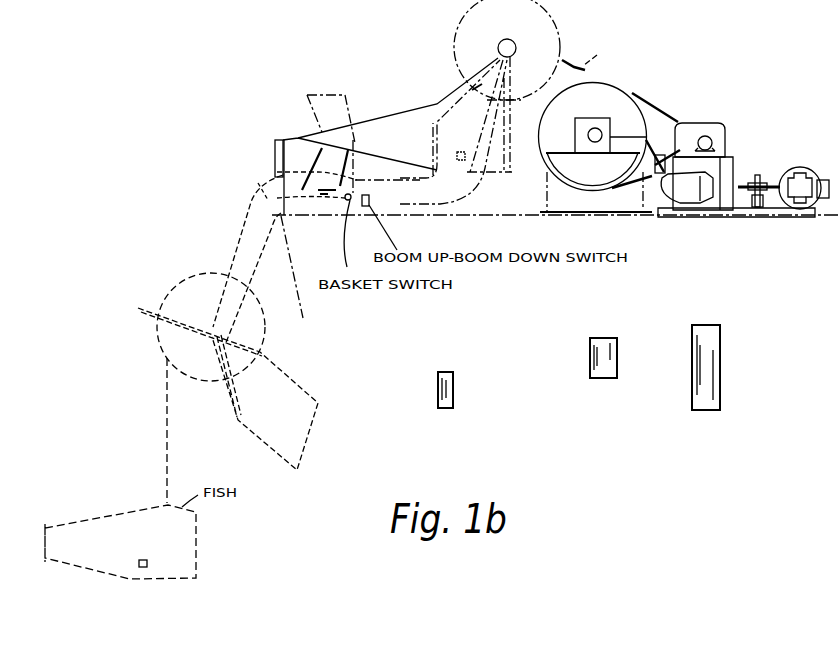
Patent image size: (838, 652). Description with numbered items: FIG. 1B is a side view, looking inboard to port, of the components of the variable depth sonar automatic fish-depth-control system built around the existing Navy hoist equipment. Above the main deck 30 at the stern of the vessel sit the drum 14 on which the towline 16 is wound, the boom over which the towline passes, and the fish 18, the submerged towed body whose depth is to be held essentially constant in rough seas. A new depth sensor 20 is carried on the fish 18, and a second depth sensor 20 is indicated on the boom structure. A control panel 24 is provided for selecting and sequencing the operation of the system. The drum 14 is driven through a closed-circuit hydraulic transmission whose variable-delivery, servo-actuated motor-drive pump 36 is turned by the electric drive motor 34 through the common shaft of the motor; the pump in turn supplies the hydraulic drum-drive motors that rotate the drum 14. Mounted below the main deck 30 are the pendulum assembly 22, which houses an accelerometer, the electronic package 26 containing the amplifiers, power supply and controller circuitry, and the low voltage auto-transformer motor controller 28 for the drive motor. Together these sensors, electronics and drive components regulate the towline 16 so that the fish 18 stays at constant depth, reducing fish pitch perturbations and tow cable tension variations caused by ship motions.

The drum 14 is at (620, 93).
The towline 16 is at (589, 57).
The fish 18 is at (385, 117).
The depth sensor 20 is at (157, 607).
The pendulum assembly 22 is at (438, 398).
The control panel 24 is at (275, 151).
The electronic package 26 is at (602, 375).
The motor controller 28 is at (700, 410).
The main deck 30 is at (536, 216).
The electric drive motor 34 is at (795, 168).
The motor-drive pump 36 is at (800, 198).